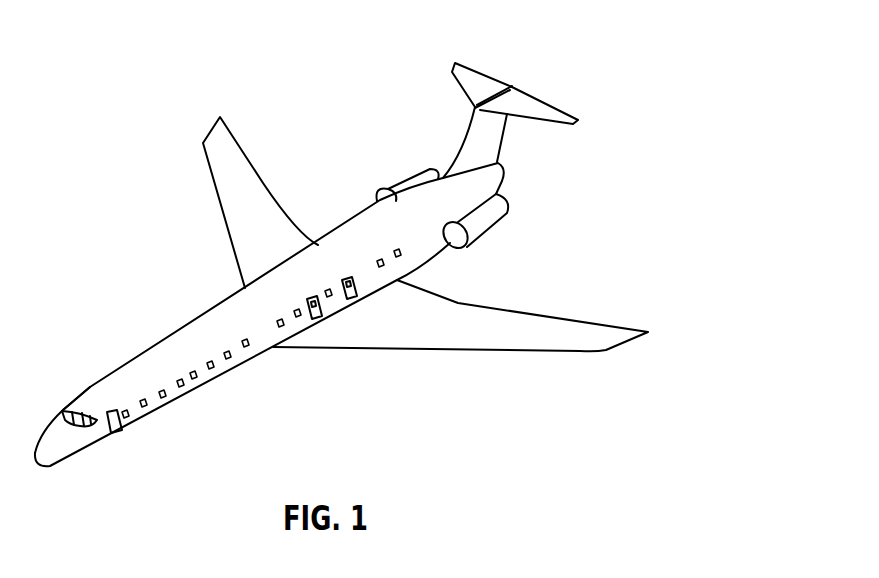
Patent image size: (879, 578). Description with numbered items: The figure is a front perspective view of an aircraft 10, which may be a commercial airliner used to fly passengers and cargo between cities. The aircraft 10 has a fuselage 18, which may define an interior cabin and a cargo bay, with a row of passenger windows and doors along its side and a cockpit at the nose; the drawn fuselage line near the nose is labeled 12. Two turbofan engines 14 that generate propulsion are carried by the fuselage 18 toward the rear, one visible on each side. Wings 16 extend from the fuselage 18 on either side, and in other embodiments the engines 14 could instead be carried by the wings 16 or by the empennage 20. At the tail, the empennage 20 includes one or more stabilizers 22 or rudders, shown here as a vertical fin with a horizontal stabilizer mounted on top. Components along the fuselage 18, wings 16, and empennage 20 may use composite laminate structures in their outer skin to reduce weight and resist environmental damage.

The aircraft 10 is at (269, 314).
The fuselage 12 is at (117, 230).
The turbofan engines 14 is at (397, 190).
The wings 16 is at (228, 187).
The fuselage 18 is at (128, 368).
The empennage 20 is at (500, 111).
The stabilizers 22 is at (470, 77).